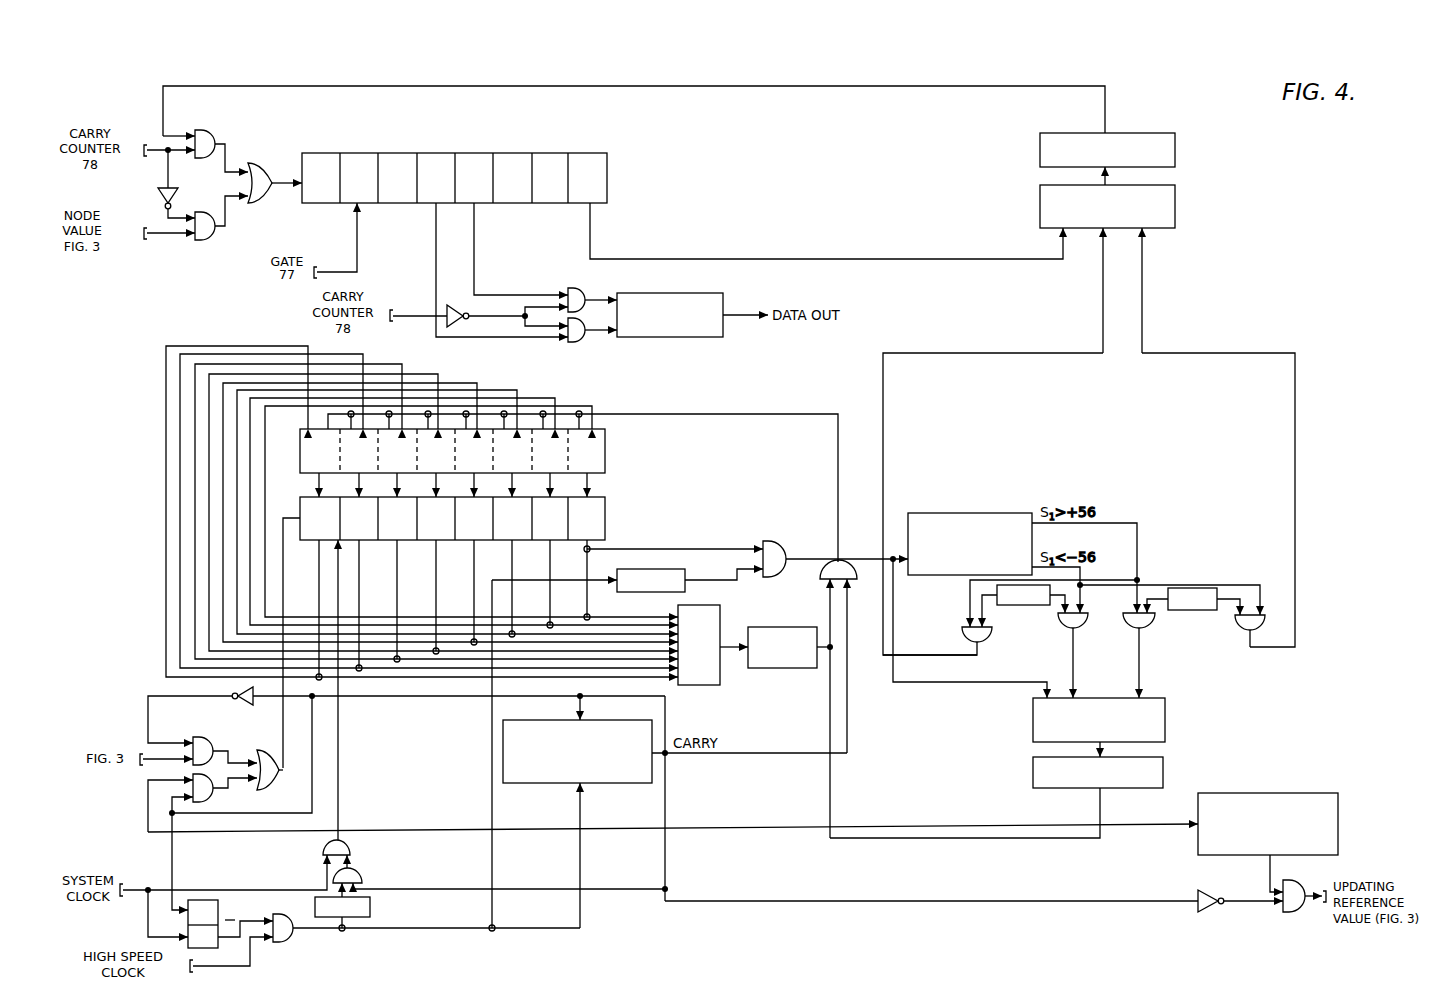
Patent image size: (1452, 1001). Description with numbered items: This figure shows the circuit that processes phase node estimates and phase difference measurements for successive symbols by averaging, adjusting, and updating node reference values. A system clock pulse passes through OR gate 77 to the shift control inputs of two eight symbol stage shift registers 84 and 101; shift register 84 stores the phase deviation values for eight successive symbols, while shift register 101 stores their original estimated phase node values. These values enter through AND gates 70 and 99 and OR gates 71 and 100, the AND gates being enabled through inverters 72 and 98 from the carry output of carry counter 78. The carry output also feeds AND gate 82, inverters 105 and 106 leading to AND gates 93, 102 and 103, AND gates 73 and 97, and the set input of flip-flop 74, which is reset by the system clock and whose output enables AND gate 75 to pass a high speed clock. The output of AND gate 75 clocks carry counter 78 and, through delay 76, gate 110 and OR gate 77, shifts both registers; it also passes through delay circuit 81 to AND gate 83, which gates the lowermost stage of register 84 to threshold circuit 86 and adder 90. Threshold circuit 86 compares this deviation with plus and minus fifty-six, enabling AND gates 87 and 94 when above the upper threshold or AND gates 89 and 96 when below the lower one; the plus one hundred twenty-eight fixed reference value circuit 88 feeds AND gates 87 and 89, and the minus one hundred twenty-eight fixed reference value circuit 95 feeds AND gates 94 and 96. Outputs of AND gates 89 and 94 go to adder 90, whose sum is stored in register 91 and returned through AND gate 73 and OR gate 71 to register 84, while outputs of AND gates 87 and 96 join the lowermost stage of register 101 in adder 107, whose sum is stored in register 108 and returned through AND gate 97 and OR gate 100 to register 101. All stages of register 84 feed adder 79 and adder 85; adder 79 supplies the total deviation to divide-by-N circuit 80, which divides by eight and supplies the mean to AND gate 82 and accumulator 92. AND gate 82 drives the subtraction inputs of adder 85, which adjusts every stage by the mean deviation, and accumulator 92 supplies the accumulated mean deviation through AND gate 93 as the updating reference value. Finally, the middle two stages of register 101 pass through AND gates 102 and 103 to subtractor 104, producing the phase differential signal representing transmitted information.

The AND gate 70 is at (200, 737).
The OR gate 71 is at (258, 752).
The inverter 72 is at (246, 705).
The AND gate 73 is at (213, 797).
The flip-flop 74 is at (200, 900).
The AND gate 75 is at (290, 942).
The delay 76 is at (370, 908).
The OR gate 77 is at (345, 840).
The carry counter 78 is at (600, 783).
The adder 79 is at (695, 685).
The divide-by-N circuit 80 is at (765, 668).
The delay circuit 81 is at (685, 569).
The AND gate 82 is at (820, 575).
The AND gate 83 is at (781, 545).
The shift register 84 is at (605, 520).
The adder 85 is at (605, 455).
The threshold circuit 86 is at (925, 513).
The AND gate 87 is at (987, 644).
The +128 fixed reference value circuit 88 is at (1018, 605).
The AND gate 89 is at (1080, 630).
The adder 90 is at (1033, 722).
The register 91 is at (1033, 777).
The accumulator 92 is at (1255, 793).
The AND gate 93 is at (1300, 884).
The AND gate 94 is at (1146, 630).
The −128 fixed reference value circuit 95 is at (1190, 610).
The AND gate 96 is at (1258, 632).
The AND gate 97 is at (205, 130).
The inverter 98 is at (176, 197).
The AND gate 99 is at (207, 240).
The OR gate 100 is at (260, 163).
The shift register 101 is at (395, 153).
The AND gate 102 is at (582, 290).
The AND gate 103 is at (582, 341).
The subtractor 104 is at (670, 337).
The inverter 105 is at (455, 328).
The inverter 106 is at (1210, 890).
The adder 107 is at (1175, 200).
The register 108 is at (1175, 147).
The gate 110 is at (362, 873).